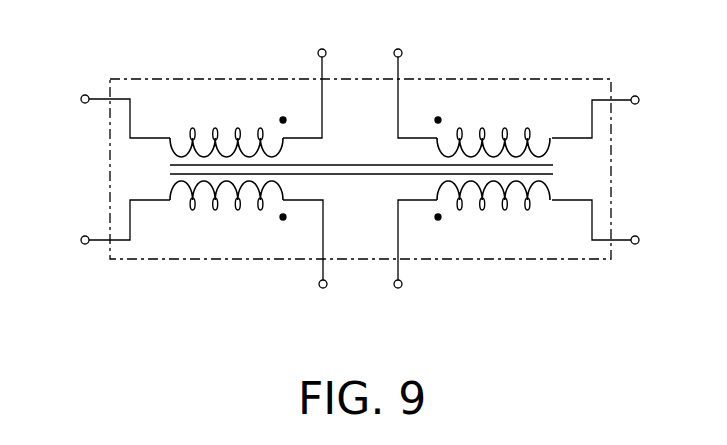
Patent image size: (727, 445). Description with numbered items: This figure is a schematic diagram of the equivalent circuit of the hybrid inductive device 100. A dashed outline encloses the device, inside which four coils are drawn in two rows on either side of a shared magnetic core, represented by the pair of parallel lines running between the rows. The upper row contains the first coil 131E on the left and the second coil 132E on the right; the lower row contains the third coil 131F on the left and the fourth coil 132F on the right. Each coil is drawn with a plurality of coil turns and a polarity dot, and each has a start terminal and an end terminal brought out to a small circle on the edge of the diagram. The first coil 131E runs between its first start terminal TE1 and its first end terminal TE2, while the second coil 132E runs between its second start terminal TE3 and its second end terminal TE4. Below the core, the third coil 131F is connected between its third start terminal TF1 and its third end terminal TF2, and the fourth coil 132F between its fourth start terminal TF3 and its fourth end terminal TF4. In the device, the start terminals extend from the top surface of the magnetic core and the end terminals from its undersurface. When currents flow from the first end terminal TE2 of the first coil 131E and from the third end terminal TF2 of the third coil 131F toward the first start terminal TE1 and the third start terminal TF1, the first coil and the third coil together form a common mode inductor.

The hybrid inductive device 100 is at (143, 78).
The first coil 131E is at (227, 130).
The third coil 131F is at (213, 206).
The second coil 132E is at (497, 130).
The fourth coil 132F is at (487, 206).
The first start terminal TE1 is at (312, 81).
The first end terminal TE2 is at (98, 112).
The second start terminal TE3 is at (403, 81).
The second end terminal TE4 is at (622, 112).
The third start terminal TF1 is at (312, 260).
The third end terminal TF2 is at (98, 228).
The fourth start terminal TF3 is at (405, 260).
The fourth end terminal TF4 is at (621, 228).